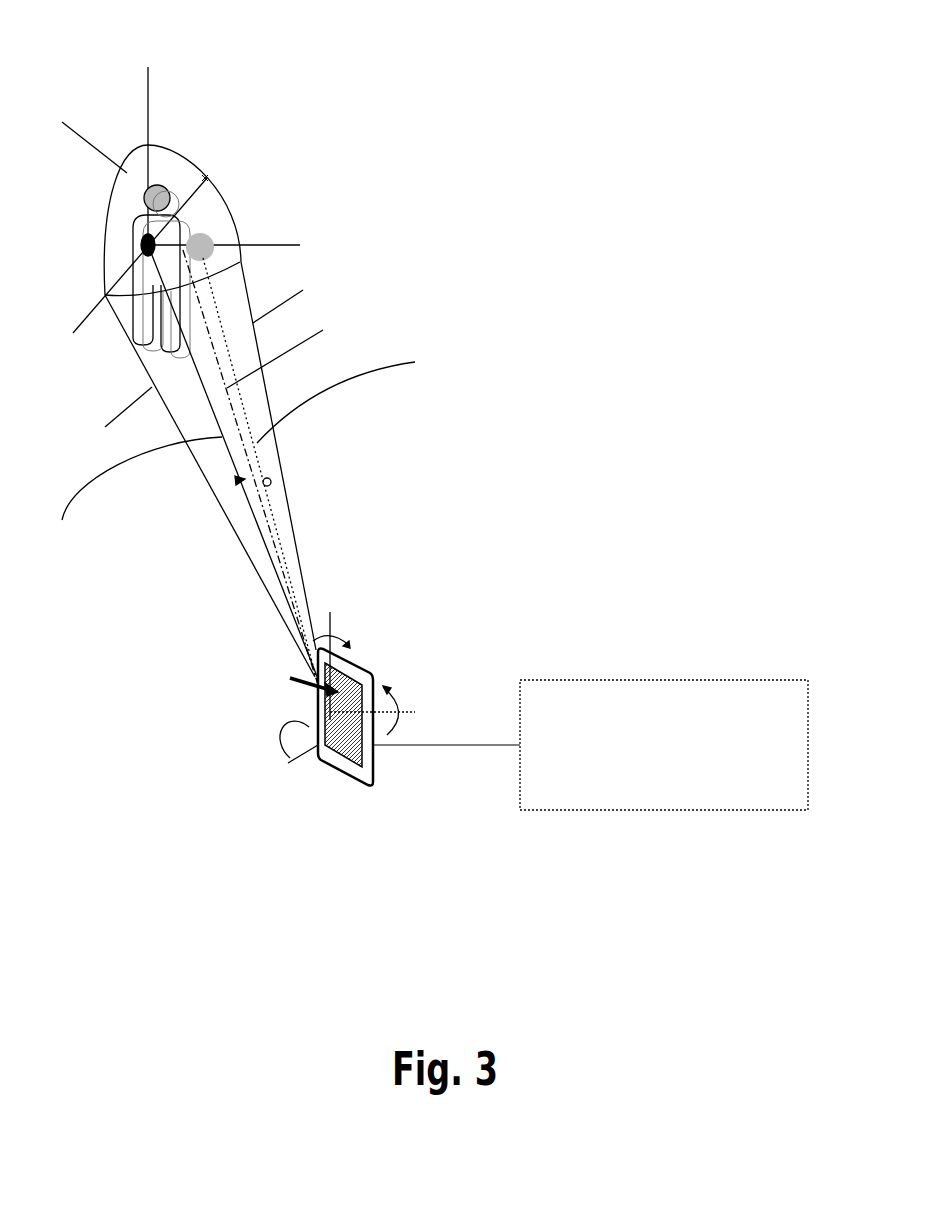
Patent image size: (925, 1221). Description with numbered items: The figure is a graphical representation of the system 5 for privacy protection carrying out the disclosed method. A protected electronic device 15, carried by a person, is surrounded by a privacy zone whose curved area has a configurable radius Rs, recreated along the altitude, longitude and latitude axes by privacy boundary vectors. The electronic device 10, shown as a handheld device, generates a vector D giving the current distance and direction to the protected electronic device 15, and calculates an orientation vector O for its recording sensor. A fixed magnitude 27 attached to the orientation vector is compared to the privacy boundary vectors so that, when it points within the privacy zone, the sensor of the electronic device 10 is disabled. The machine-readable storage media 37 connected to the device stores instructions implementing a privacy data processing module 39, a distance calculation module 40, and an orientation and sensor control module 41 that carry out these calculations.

The system for privacy protection 5 is at (562, 71).
The electronic device 10 is at (367, 662).
The protected electronic device 15 is at (140, 237).
The fixed magnitude 27 is at (213, 237).
The non-transitory machine-readable storage media 37 is at (664, 718).
The privacy data processing module 39 is at (659, 725).
The distance calculation module 40 is at (665, 745).
The orientation and sensor control module 41 is at (665, 775).